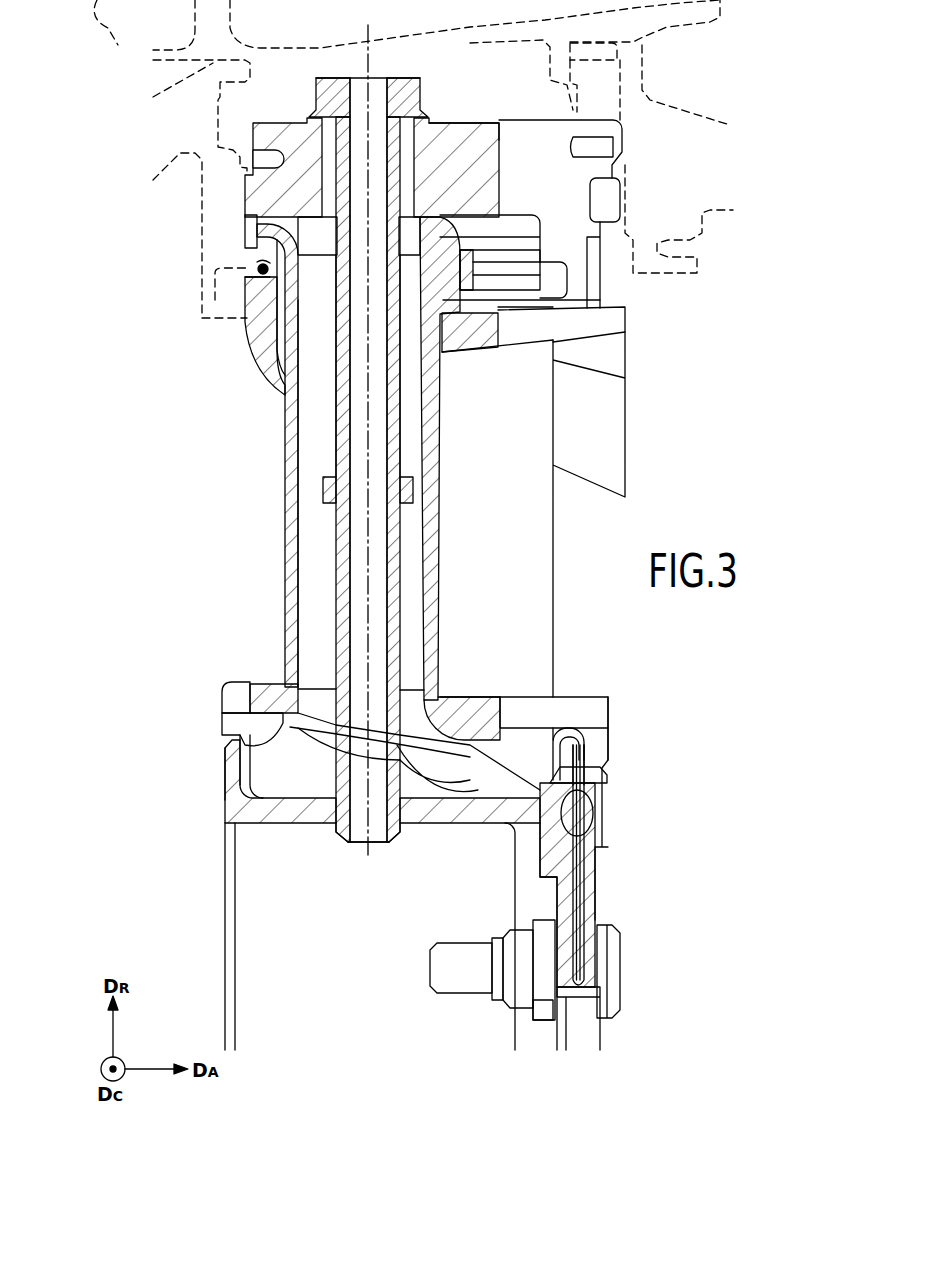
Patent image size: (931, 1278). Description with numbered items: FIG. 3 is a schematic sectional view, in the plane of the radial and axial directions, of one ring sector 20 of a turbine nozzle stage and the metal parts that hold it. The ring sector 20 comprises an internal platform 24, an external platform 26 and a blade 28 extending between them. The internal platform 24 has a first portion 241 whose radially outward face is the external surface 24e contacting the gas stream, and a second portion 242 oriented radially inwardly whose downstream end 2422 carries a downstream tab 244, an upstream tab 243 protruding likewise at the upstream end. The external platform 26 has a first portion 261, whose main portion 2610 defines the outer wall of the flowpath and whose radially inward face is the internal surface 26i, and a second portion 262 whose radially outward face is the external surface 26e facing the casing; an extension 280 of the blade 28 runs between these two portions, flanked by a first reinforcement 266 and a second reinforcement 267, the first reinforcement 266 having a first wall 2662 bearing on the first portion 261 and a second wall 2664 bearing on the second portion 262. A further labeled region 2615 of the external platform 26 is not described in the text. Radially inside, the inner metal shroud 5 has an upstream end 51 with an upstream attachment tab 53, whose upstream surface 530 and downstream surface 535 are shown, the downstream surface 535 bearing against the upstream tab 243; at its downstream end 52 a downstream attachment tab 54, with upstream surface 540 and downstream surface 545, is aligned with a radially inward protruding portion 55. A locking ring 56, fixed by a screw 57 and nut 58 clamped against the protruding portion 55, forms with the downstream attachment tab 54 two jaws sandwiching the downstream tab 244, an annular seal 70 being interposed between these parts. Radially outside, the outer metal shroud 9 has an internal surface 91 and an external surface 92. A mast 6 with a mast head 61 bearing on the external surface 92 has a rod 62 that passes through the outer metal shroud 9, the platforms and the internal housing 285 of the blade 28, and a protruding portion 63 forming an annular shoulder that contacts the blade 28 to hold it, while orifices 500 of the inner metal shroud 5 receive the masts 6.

The inner metal shroud 5 is at (420, 822).
The mast 6 is at (338, 605).
The outer metal shroud 9 is at (465, 135).
The ring sector 20 is at (588, 527).
The internal platform 24 is at (240, 690).
The external surface 24e is at (496, 692).
The external platform 26 is at (615, 318).
The external surface 26e is at (484, 213).
The internal surface 26i is at (495, 347).
The blade 28 is at (290, 562).
The upstream end 51 is at (240, 828).
The downstream end 52 is at (508, 830).
The upstream attachment tab 53 is at (235, 798).
The downstream attachment tab 54 is at (590, 770).
The protruding portion 55 is at (560, 907).
The locking ring 56 is at (588, 877).
The screw 57 is at (610, 950).
The nut 58 is at (545, 970).
The mast head 61 is at (338, 88).
The rod 62 is at (335, 443).
The protruding portion 63 is at (325, 484).
The annular seal 70 is at (582, 905).
The internal surface 91 is at (310, 218).
The external surface 92 is at (449, 118).
The first portion 241 is at (520, 705).
The second portion 242 is at (545, 730).
The upstream tab 243 is at (235, 731).
The downstream tab 244 is at (578, 810).
The first portion 261 is at (582, 325).
The second portion 262 is at (262, 220).
The first reinforcement 266 is at (590, 237).
The second reinforcement 267 is at (256, 262).
The extension 280 is at (455, 270).
The internal housing 285 is at (318, 518).
The orifices 500 is at (342, 822).
The upstream surface 530 is at (230, 775).
The downstream surface 535 is at (248, 772).
The upstream surface 540 is at (500, 772).
The downstream surface 545 is at (573, 785).
The downstream end 2422 is at (583, 738).
The main portion 2610 is at (457, 342).
The skirt 2615 is at (256, 330).
The first wall 2662 is at (560, 300).
The second wall 2664 is at (532, 262).